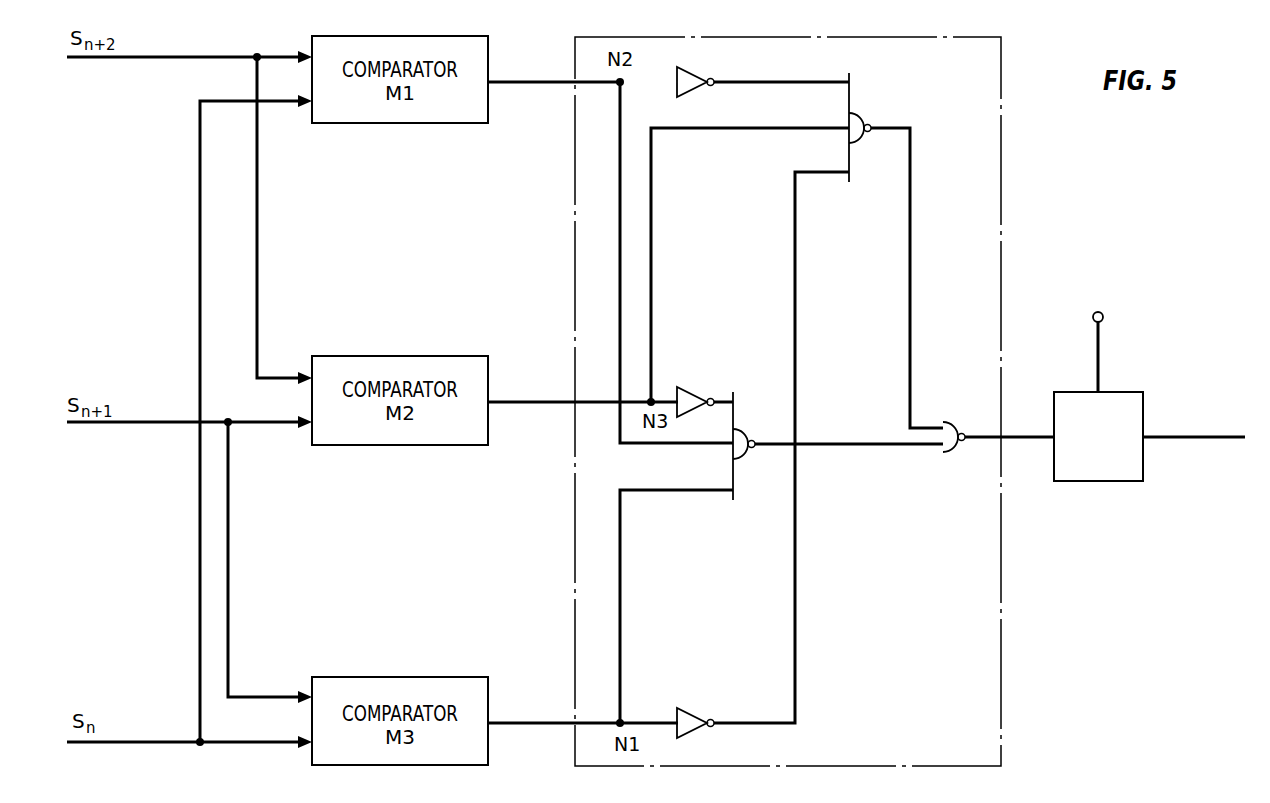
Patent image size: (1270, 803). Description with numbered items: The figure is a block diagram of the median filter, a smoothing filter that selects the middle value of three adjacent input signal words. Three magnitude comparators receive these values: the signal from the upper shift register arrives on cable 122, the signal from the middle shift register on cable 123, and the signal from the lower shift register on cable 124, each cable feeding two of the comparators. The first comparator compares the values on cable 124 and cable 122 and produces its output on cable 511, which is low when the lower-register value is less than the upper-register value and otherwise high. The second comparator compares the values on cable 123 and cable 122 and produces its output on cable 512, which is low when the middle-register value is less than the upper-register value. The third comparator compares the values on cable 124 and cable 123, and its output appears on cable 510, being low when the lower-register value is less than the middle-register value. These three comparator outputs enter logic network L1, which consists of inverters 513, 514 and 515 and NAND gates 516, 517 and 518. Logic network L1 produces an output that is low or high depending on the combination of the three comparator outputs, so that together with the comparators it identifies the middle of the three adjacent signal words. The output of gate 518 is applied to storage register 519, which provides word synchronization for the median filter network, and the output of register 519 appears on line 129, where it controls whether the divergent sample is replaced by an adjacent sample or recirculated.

The cable 122 is at (212, 57).
The cable 123 is at (182, 420).
The cable 124 is at (146, 740).
The cable 510 is at (545, 722).
The cable 511 is at (545, 85).
The cable 512 is at (545, 400).
The inverter 513 is at (690, 720).
The inverter 514 is at (690, 81).
The inverter 515 is at (685, 399).
The NAND gate 516 is at (854, 119).
The NAND gate 517 is at (737, 439).
The NAND gate 518 is at (947, 431).
The storage register 519 is at (1128, 481).
The line 129 is at (1194, 421).
The logic network L1 is at (988, 646).